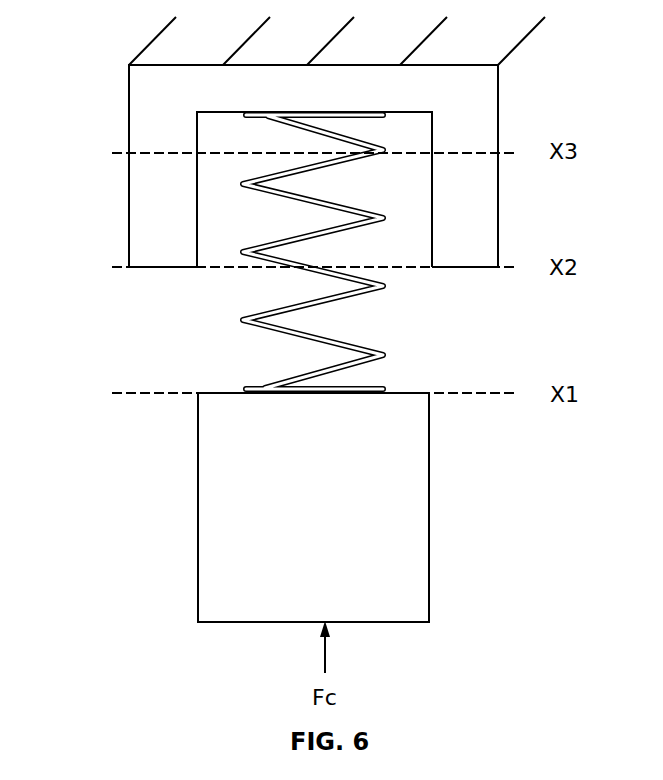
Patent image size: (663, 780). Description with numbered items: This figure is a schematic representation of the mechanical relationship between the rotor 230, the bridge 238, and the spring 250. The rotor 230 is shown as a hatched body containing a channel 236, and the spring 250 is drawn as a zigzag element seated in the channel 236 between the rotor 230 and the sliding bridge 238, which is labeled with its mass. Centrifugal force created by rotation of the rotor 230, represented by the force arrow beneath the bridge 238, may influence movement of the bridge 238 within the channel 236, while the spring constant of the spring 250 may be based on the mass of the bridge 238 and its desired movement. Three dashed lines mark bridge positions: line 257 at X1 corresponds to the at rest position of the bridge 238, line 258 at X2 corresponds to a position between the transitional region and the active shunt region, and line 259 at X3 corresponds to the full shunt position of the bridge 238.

The rotor 230 is at (129, 113).
The channel 236 is at (197, 185).
The spring 250 is at (243, 320).
The bridge 238 is at (430, 523).
The line at X1 257 is at (460, 395).
The line at X2 258 is at (405, 270).
The line at X3 259 is at (460, 155).